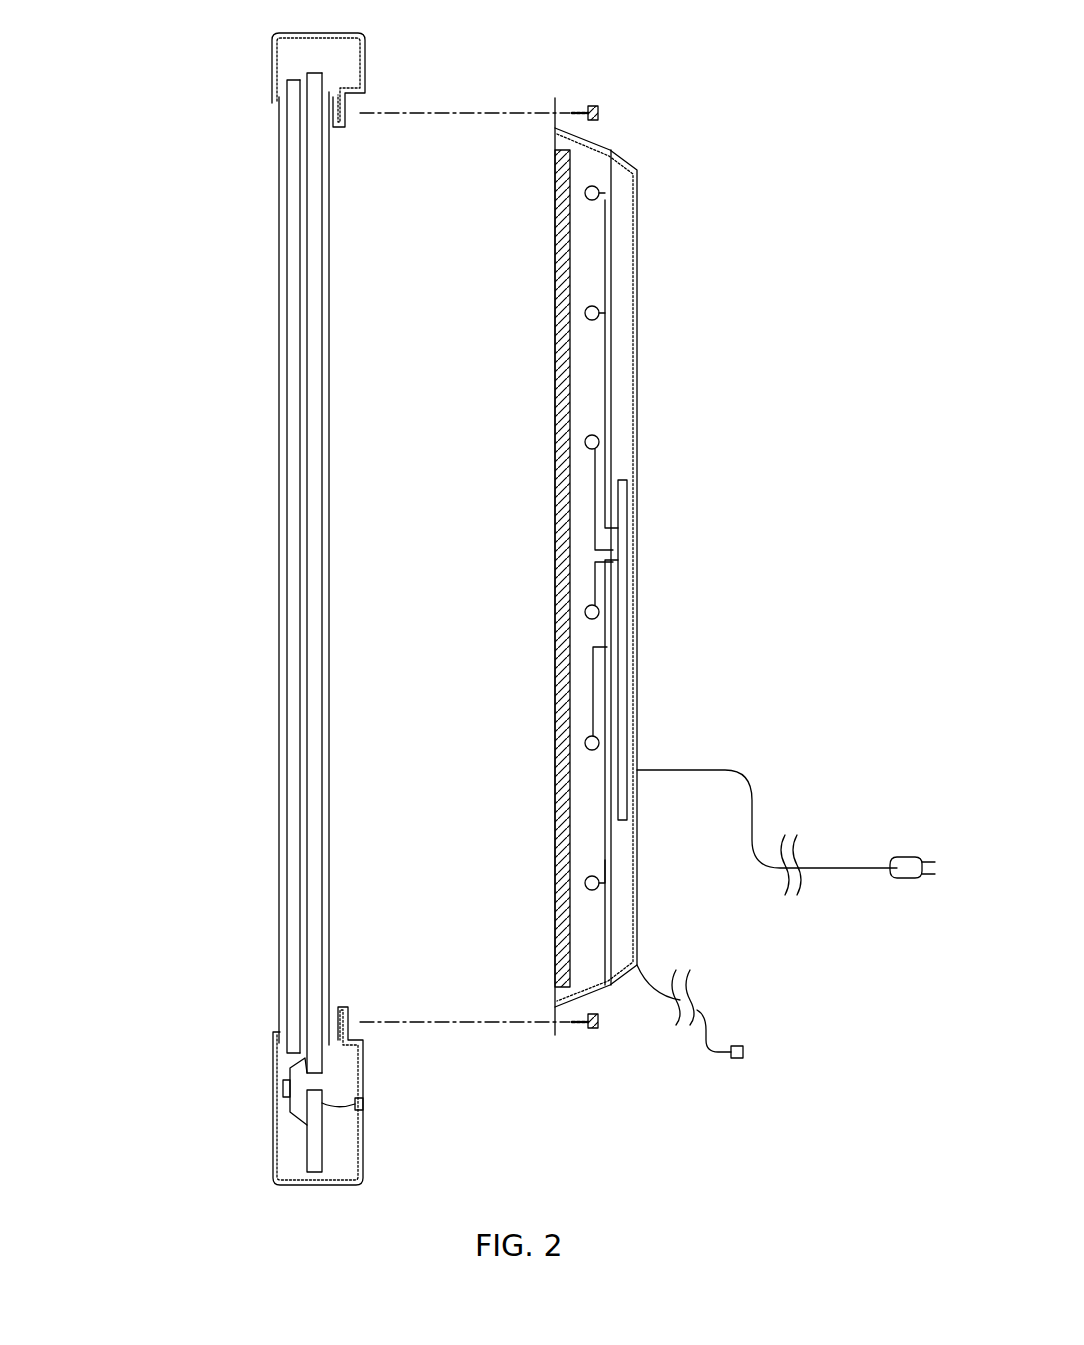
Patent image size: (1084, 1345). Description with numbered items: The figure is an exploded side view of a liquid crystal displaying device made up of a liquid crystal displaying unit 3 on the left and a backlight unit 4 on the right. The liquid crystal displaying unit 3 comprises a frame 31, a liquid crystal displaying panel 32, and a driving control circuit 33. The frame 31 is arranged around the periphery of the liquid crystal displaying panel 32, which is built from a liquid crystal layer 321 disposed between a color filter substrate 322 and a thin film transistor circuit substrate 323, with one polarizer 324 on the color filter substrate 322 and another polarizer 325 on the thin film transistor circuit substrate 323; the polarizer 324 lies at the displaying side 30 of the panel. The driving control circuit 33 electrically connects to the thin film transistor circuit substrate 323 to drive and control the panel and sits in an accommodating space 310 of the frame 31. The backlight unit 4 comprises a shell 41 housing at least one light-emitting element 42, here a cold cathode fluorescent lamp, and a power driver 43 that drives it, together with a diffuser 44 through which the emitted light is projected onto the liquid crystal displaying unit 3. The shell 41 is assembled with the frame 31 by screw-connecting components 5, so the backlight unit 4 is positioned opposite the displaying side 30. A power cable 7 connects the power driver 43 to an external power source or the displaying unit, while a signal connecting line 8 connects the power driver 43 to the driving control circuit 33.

The liquid crystal displaying unit 3 is at (155, 92).
The frame 31 is at (270, 65).
The liquid crystal displaying panel 32 is at (276, 133).
The displaying side 30 is at (276, 466).
The liquid crystal layer 321 is at (300, 606).
The color filter substrate 322 is at (295, 657).
The thin film transistor (TFT) circuit substrate 323 is at (320, 697).
The polarizer 324 is at (287, 748).
The polarizer 325 is at (327, 790).
The driving control circuit 33 is at (300, 1130).
The accommodating space 310 is at (287, 1147).
The backlight unit 4 is at (755, 585).
The shell 41 is at (637, 603).
The light-emitting element 42 is at (600, 615).
The power driver 43 is at (621, 676).
The diffuser 44 is at (555, 302).
The screw-connecting components 5 is at (598, 107).
The power cable 7 is at (752, 793).
The signal connecting line 8 is at (705, 1020).